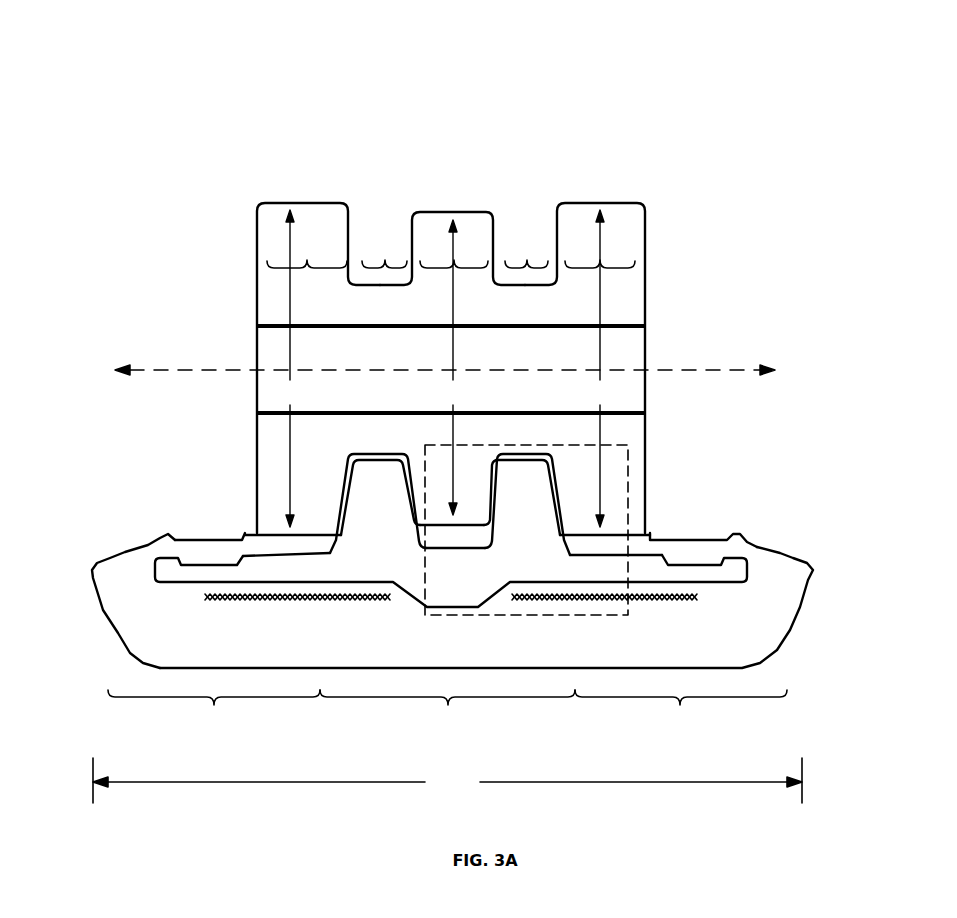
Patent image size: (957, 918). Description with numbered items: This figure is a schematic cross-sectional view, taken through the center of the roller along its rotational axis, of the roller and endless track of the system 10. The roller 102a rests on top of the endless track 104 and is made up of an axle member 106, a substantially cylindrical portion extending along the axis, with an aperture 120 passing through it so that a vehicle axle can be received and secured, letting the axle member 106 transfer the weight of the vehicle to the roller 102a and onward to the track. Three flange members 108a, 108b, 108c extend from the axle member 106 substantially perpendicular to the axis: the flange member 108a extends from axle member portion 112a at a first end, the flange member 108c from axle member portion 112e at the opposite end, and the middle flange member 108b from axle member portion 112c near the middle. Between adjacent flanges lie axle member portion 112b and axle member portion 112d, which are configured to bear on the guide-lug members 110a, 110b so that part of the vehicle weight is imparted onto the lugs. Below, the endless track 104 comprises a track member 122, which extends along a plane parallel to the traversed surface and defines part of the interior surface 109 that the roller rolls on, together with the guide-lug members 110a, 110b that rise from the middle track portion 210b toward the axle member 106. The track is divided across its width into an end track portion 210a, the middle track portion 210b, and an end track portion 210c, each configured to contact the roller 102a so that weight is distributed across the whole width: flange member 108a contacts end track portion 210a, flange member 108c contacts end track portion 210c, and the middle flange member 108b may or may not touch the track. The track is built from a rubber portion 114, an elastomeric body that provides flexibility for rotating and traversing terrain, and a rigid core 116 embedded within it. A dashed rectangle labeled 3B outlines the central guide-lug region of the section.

The system 10 is at (766, 86).
The roller 102a is at (701, 251).
The endless track 104 is at (858, 522).
The axle member 106 is at (275, 298).
The flange member 108a is at (305, 510).
The flange member 108b is at (475, 495).
The flange member 108c is at (625, 507).
The interior surface 109 is at (761, 529).
The guide-lug member 110a is at (393, 496).
The guide-lug member 110b is at (537, 497).
The axle member portion 112a is at (307, 251).
The axle member portion 112b is at (384, 251).
The axle member portion 112c is at (454, 251).
The axle member portion 112d is at (527, 251).
The axle member portion 112e is at (600, 251).
The rubber portion 114 is at (765, 562).
The rigid core 116 is at (653, 568).
The aperture 120 is at (275, 345).
The track member 122 is at (108, 562).
The end track portion 210a is at (214, 713).
The middle track portion 210b is at (447, 713).
The end track portion 210c is at (681, 713).
The section indicator for FIG. 3B is at (622, 507).